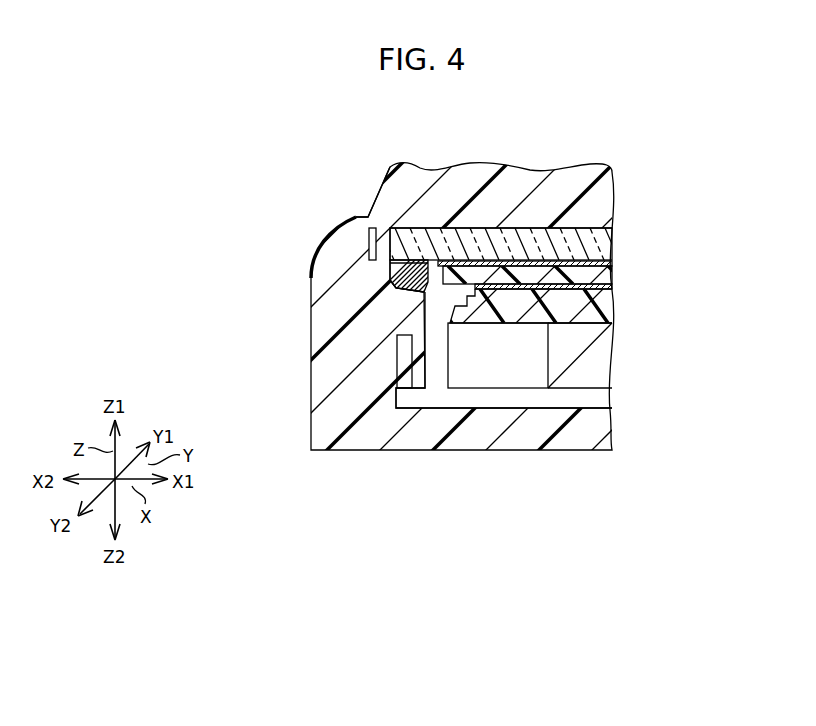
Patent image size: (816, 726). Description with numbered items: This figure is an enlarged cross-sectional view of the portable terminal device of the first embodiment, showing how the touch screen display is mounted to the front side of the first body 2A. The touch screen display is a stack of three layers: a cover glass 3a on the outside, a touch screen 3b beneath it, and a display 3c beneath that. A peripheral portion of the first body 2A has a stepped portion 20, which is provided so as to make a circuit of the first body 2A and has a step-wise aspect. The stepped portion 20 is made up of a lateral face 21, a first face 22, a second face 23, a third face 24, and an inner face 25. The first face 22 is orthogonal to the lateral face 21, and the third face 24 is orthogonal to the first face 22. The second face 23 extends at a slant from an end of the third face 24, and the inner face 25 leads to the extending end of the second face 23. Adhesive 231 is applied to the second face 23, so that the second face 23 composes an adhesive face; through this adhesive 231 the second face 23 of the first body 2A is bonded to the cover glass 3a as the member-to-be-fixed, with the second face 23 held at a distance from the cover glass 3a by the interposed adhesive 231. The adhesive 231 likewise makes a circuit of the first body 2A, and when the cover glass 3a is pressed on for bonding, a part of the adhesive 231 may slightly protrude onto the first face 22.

The first body 2A is at (323, 236).
The stepped portion 20 is at (347, 257).
The lateral face 21 is at (372, 218).
The first face 22 is at (381, 257).
The second face 23 is at (427, 278).
The adhesive 231 is at (418, 266).
The third face 24 is at (397, 288).
The inner face 25 is at (430, 376).
The cover glass 3a is at (604, 240).
The touch screen 3b is at (604, 275).
The display 3c is at (604, 306).